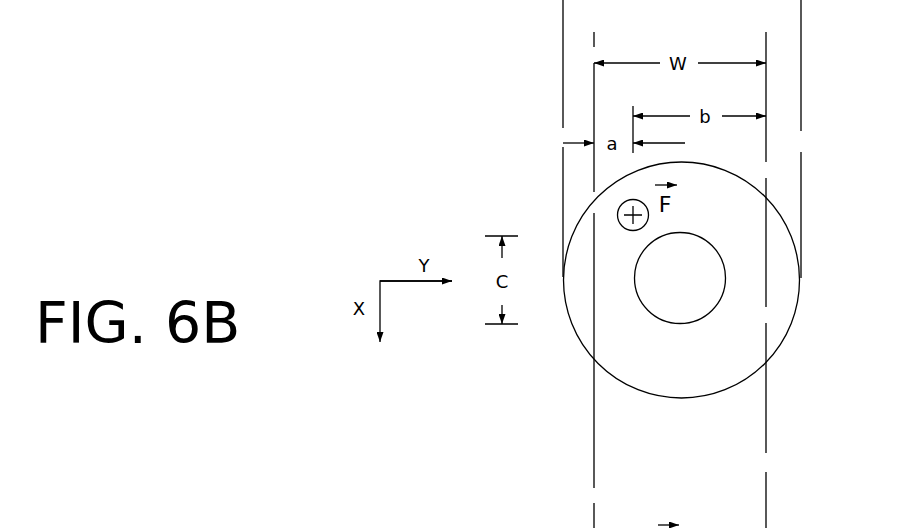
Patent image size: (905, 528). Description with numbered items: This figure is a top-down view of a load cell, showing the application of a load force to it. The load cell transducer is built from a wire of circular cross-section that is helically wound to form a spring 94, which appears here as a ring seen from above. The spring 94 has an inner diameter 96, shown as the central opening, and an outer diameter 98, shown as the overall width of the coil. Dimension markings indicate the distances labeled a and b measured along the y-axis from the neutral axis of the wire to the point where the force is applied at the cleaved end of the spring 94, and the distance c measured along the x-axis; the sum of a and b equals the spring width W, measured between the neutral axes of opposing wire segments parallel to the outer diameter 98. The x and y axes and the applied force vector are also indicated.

The spring 94 is at (820, 198).
The inner diameter 96 is at (635, 278).
The outer diameter 98 is at (801, 12).